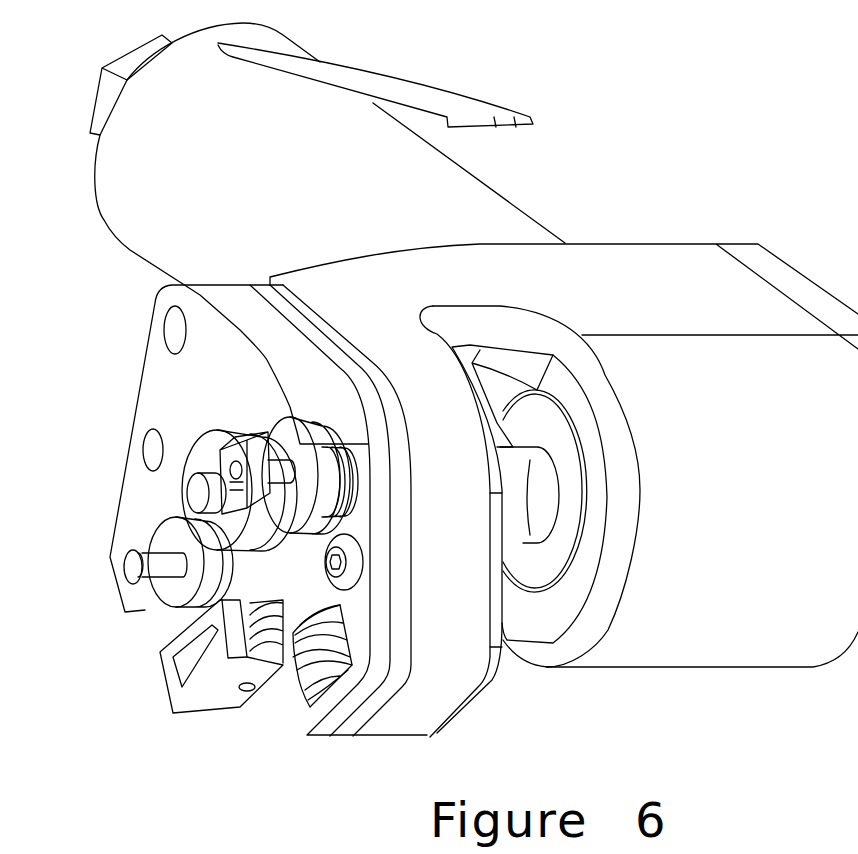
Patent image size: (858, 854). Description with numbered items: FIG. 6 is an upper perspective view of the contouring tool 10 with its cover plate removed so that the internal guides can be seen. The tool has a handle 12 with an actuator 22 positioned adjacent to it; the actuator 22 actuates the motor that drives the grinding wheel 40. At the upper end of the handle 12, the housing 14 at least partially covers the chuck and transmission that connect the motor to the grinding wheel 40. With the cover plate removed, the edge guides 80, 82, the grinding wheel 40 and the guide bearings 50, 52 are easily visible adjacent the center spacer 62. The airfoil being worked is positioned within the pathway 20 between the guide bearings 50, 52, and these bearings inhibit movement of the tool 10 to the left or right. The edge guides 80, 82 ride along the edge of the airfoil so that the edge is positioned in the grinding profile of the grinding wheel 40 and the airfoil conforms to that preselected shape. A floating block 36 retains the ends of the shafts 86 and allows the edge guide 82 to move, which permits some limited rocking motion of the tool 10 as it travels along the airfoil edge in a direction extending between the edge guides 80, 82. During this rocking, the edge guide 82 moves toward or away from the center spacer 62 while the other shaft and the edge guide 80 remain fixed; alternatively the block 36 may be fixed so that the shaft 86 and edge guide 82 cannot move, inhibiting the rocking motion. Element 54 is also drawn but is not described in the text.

The contouring tool 10 is at (750, 85).
The handle 12 is at (450, 190).
The housing 14 is at (653, 267).
The pathway 20 is at (295, 713).
The actuator 22 is at (450, 68).
The floating block 36 is at (237, 436).
The grinding wheel 40 is at (187, 527).
The guide bearing 50 is at (297, 668).
The guide bearing 52 is at (205, 640).
The bracket 54 is at (197, 703).
The center spacer 62 is at (212, 293).
The edge guide 80 is at (137, 610).
The edge guide 82 is at (293, 430).
The shaft 86 is at (290, 462).